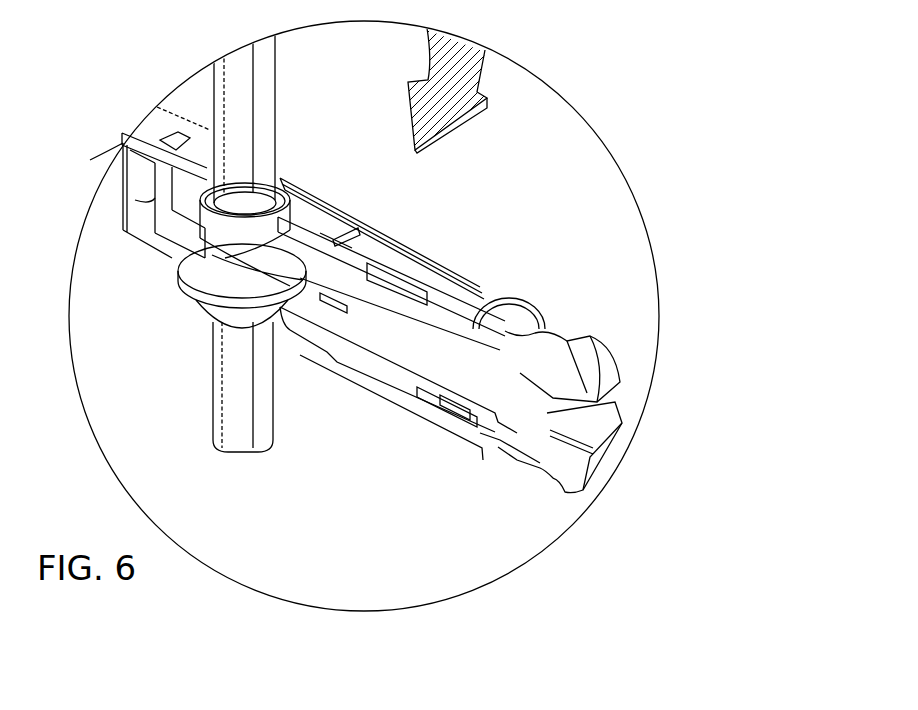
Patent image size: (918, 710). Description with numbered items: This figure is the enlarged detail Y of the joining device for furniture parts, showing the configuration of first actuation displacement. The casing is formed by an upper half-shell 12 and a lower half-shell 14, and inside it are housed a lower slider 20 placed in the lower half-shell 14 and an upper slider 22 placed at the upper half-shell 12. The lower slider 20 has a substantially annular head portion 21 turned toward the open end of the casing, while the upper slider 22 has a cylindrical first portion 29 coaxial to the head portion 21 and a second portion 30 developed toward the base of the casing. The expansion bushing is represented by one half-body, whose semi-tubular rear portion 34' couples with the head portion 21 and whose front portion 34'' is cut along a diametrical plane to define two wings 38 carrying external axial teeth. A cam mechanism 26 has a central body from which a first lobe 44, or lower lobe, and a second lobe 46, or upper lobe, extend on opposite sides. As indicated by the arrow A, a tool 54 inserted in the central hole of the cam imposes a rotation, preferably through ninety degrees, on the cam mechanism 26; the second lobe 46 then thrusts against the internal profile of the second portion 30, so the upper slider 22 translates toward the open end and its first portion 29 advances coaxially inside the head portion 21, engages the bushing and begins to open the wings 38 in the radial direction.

The upper half-shell 12 is at (440, 252).
The lower half-shell 14 is at (404, 428).
The lower slider 20 is at (181, 224).
The head portion 21 is at (457, 400).
The upper slider 22 is at (367, 318).
The cam mechanism 26 is at (185, 299).
The first portion 29 is at (493, 390).
The second portion 30 is at (333, 278).
The rear portion 34' is at (585, 268).
The front portion 34'' is at (642, 311).
The wings 38 is at (548, 372).
The first lobe 44 is at (213, 298).
The second lobe 46 is at (278, 262).
The tool 54 is at (232, 118).
The enlarged detail Y is at (590, 104).
The arrow A is at (490, 86).